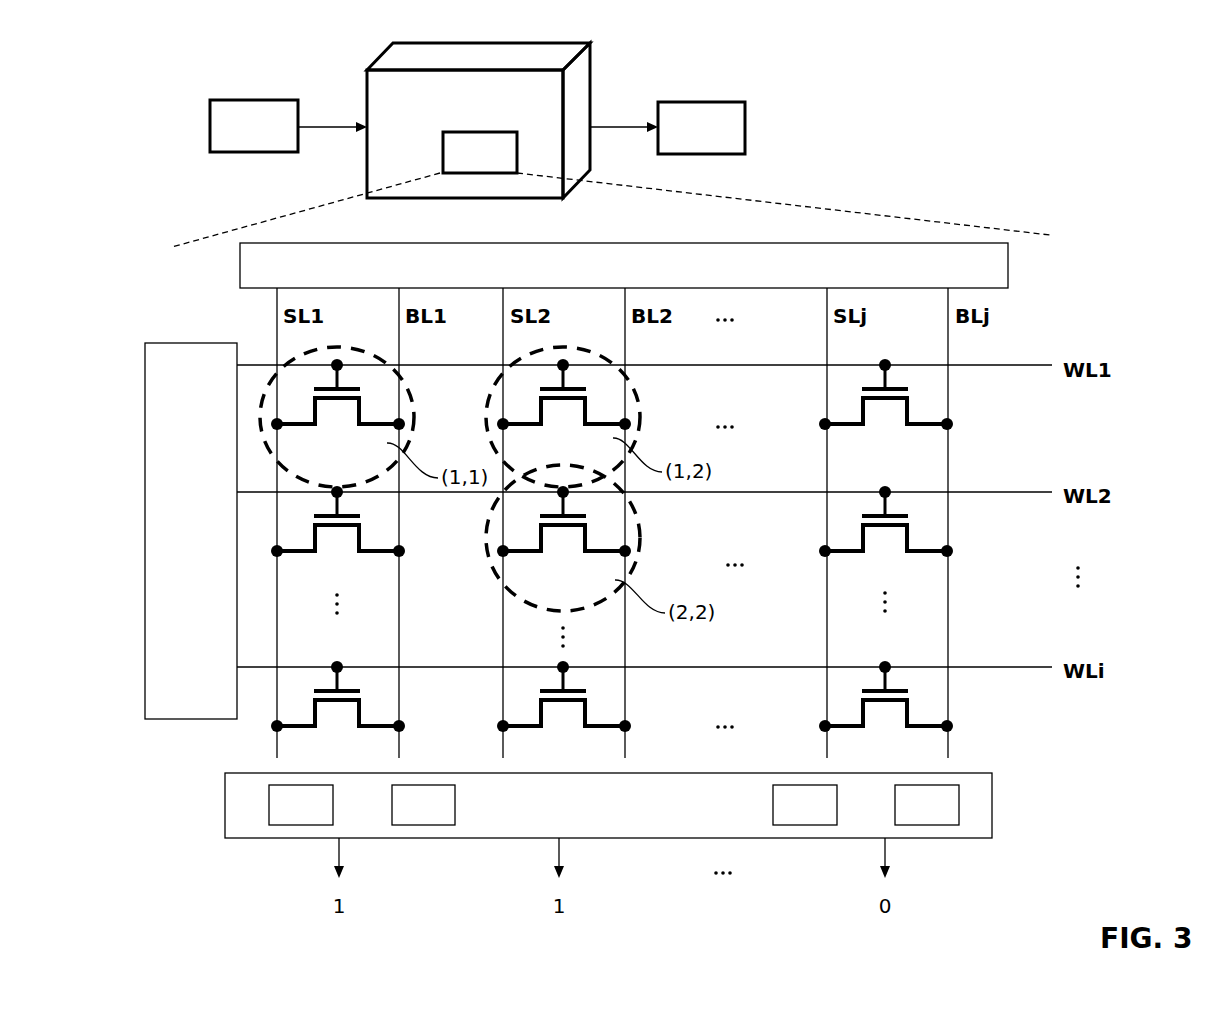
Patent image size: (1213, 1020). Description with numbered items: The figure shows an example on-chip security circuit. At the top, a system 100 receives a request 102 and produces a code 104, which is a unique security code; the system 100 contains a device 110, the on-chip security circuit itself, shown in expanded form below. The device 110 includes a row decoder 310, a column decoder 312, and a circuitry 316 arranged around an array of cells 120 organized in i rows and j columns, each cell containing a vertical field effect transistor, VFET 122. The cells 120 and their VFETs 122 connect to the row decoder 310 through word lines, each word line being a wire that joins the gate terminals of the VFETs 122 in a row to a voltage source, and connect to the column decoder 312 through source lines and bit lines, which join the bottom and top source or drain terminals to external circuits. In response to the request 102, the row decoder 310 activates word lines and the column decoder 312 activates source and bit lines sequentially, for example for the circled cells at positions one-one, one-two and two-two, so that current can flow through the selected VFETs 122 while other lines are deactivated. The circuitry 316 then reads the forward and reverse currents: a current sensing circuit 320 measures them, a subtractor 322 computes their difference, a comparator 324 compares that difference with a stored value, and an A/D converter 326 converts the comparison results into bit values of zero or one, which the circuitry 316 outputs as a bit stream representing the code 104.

The system 100 is at (447, 111).
The request 102 is at (235, 138).
The code 104 is at (682, 140).
The device 110 is at (461, 166).
The cells 120 is at (940, 480).
The VFET 122 is at (933, 413).
The row decoder 310 is at (171, 547).
The column decoder 312 is at (605, 279).
The circuitry 316 is at (605, 816).
The current sensing circuit 320 is at (282, 816).
The subtractor 322 is at (404, 816).
The comparator 324 is at (786, 816).
The A/D converter 326 is at (908, 816).